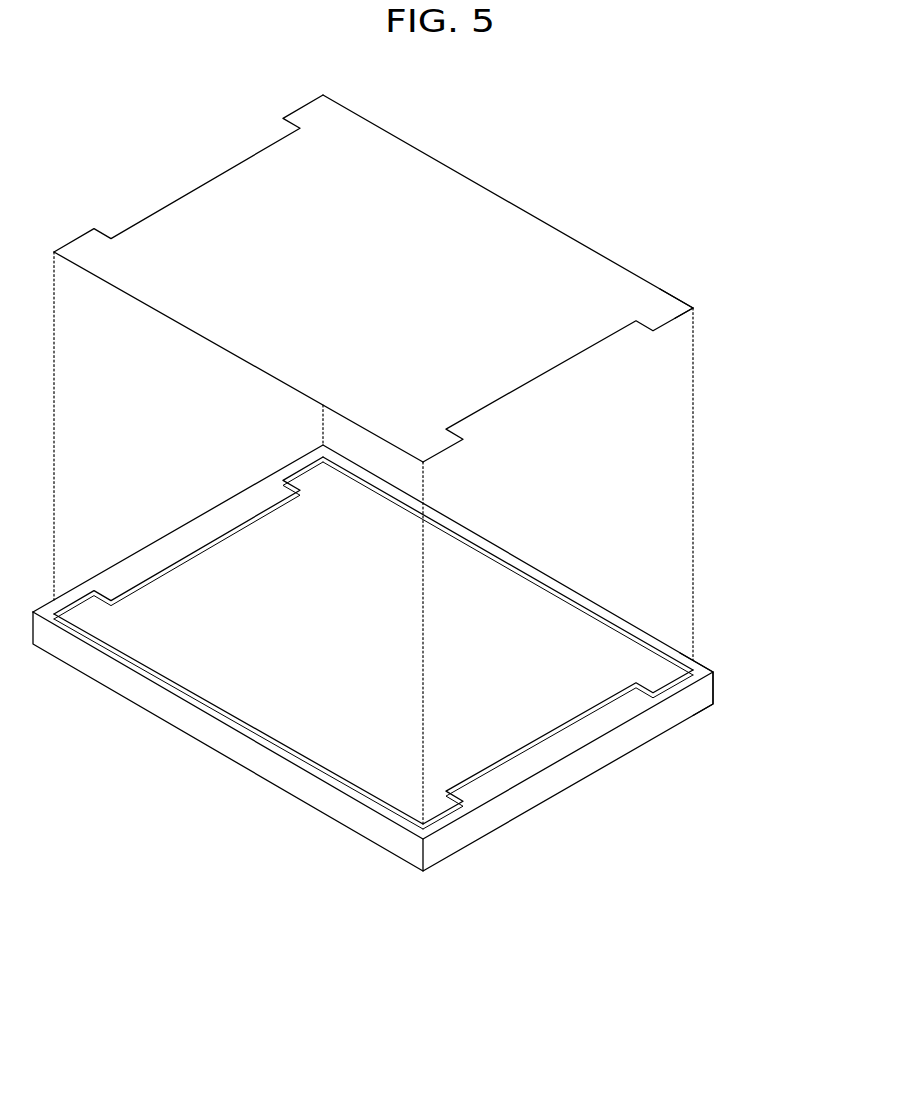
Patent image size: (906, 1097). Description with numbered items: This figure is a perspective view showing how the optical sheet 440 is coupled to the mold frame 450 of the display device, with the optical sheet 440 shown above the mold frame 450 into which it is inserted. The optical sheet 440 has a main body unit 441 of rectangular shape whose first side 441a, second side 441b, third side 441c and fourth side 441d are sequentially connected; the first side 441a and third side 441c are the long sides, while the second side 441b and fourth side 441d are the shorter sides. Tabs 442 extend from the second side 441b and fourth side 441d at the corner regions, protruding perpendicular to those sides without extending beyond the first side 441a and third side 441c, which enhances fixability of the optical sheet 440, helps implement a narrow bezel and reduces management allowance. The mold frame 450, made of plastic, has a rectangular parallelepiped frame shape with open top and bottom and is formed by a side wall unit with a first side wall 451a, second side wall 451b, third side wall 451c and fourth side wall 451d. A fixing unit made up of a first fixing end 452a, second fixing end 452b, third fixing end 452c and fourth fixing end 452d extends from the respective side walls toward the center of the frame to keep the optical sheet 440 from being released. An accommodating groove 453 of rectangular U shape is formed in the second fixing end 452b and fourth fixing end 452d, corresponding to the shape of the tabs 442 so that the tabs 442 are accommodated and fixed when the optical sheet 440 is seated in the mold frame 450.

The optical sheet 440 is at (424, 263).
The main body unit 441 is at (373, 278).
The first side 441a is at (193, 331).
The second side 441b is at (200, 186).
The third side 441c is at (508, 201).
The fourth side 441d is at (509, 394).
The tab 442 is at (668, 305).
The mold frame 450 is at (396, 689).
The first side wall 451a is at (193, 721).
The second side wall 451b is at (177, 528).
The third side wall 451c is at (520, 559).
The fourth side wall 451d is at (540, 792).
The first fixing end 452a is at (262, 737).
The second fixing end 452b is at (228, 516).
The third fixing end 452c is at (578, 597).
The fourth fixing end 452d is at (570, 744).
The accommodating groove 453 is at (662, 681).